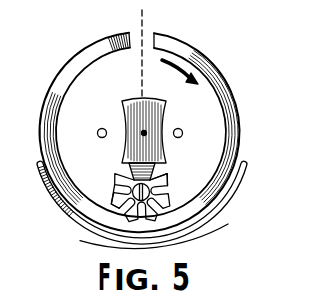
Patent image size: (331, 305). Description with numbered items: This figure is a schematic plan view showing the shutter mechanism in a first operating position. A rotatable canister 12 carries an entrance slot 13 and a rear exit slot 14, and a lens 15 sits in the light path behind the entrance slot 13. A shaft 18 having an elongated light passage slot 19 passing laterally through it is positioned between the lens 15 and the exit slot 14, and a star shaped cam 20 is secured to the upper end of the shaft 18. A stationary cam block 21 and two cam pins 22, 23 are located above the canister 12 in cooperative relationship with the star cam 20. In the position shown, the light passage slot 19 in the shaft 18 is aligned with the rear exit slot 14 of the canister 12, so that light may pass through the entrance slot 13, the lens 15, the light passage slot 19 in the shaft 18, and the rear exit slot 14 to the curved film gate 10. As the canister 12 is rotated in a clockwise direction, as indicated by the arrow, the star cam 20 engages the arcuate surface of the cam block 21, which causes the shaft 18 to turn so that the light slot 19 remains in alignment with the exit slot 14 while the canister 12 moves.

The curved film gate 10 is at (229, 196).
The canister 12 is at (203, 63).
The entrance slot 13 is at (139, 32).
The rear exit slot 14 is at (186, 246).
The lens 15 is at (147, 132).
The shaft 18 is at (118, 186).
The light passage slot 19 is at (160, 178).
The star shaped cam 20 is at (120, 198).
The stationary cam block 21 is at (132, 100).
The cam pin 22 is at (103, 129).
The cam pin 23 is at (180, 130).